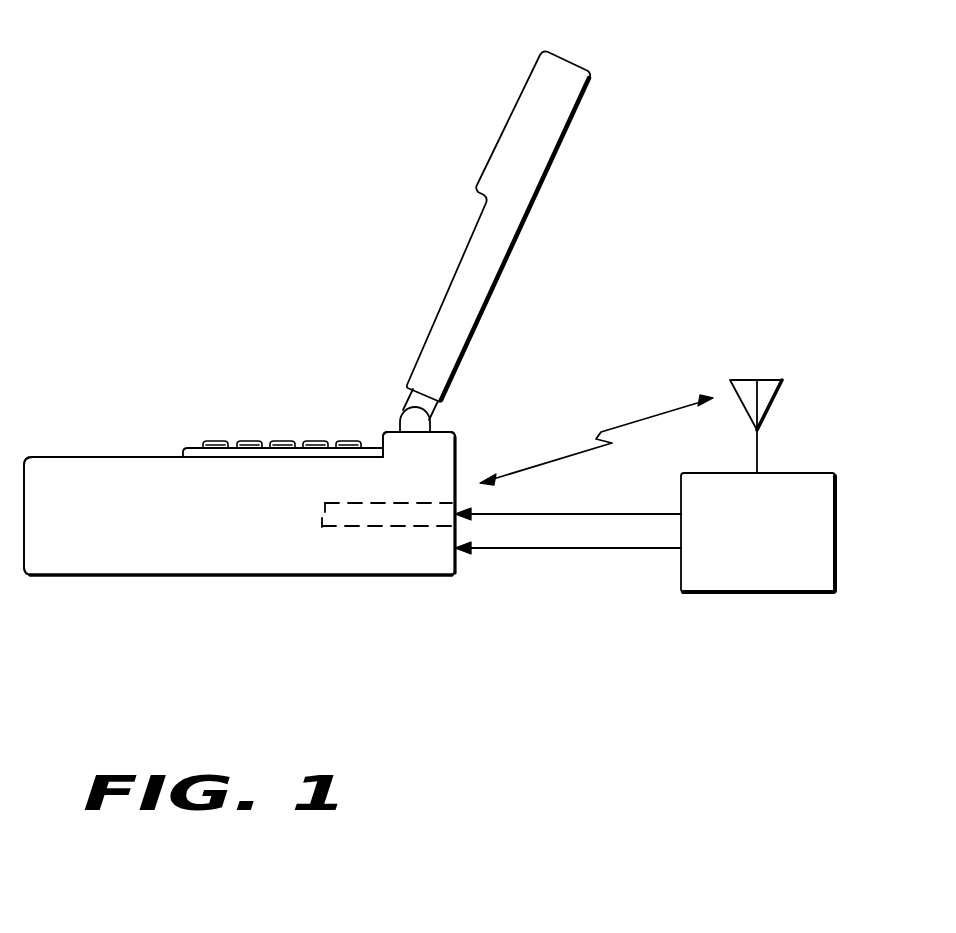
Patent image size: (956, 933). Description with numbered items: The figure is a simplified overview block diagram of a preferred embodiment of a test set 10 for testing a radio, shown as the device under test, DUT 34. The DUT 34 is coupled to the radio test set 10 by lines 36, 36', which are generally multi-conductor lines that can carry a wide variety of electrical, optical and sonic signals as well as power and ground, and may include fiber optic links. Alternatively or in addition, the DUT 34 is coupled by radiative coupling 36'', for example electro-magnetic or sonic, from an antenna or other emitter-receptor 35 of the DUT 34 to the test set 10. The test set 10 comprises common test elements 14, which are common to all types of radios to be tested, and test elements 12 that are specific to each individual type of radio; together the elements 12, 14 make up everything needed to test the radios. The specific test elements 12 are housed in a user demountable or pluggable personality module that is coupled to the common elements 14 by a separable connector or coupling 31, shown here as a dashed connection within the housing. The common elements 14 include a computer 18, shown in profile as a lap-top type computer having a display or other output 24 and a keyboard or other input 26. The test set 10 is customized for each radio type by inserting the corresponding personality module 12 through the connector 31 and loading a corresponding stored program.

The test set 10 is at (473, 700).
The test elements specific to each individual type of radio 12 is at (392, 518).
The common test elements 14 is at (123, 557).
The computer 18 is at (455, 453).
The display 24 is at (567, 63).
The keyboard 26 is at (257, 407).
The connector 31 is at (322, 522).
The radio (DUT) 34 is at (836, 562).
The antenna or other emitter-receptor 35 is at (767, 380).
The line 36 is at (568, 571).
The line 36' is at (568, 494).
The radiative coupling 36'' is at (596, 426).